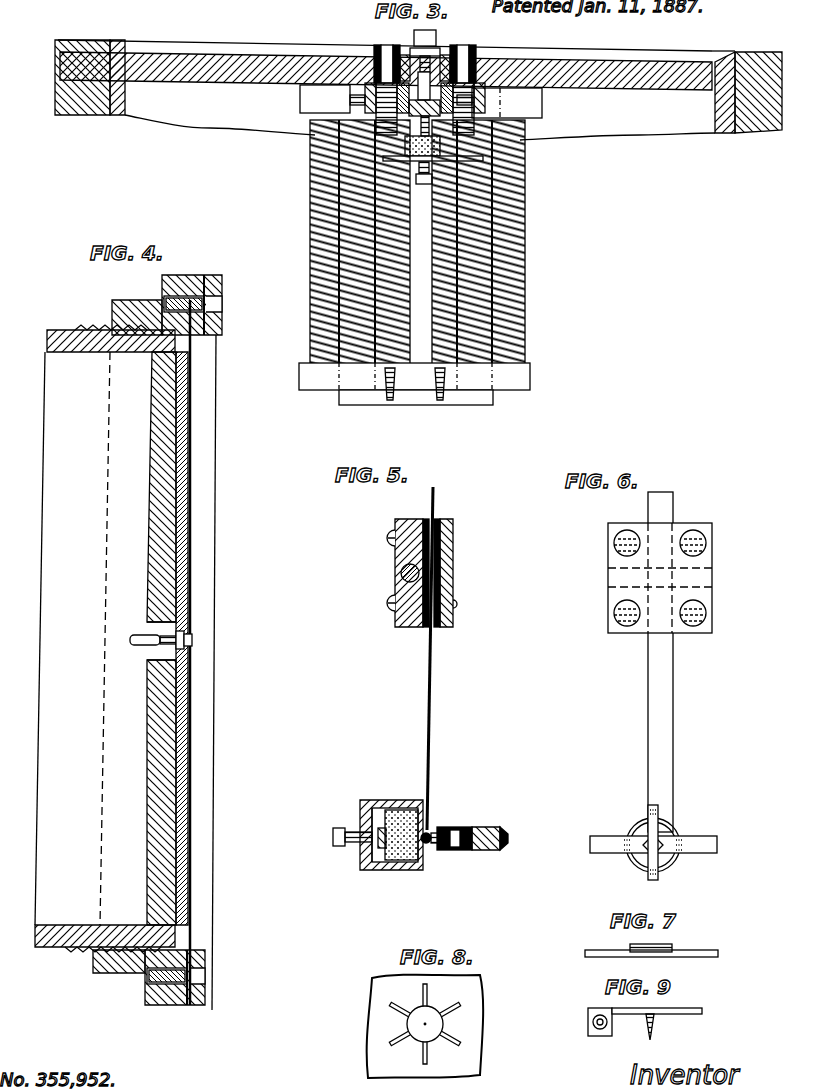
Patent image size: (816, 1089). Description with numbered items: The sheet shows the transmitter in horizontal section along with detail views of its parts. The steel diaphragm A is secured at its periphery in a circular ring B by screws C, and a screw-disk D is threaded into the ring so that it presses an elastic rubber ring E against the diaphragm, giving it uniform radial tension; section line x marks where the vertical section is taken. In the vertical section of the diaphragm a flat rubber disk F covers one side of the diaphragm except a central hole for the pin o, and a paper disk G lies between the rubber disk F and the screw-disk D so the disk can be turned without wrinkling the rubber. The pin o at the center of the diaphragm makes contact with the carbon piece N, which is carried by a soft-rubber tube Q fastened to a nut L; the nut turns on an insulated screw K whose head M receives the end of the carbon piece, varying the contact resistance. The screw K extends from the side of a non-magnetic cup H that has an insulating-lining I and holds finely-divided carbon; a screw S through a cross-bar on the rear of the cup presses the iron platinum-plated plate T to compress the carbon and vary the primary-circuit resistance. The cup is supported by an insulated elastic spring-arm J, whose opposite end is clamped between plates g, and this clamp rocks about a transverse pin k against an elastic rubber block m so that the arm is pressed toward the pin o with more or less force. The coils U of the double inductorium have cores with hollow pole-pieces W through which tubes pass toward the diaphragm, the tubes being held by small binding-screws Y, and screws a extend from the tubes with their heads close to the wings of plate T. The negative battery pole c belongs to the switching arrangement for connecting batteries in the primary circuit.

In FIG. 3, the diaphragm A is at (288, 50).
In FIG. 4, the diaphragm A is at (192, 446).
In FIG. 3, the elastic rubber ring E is at (418, 75).
In FIG. 3, the screw-disk D is at (420, 114).
In FIG. 4, the screw-disk D is at (125, 667).
In FIG. 3, the binding-screws Y is at (346, 99).
In FIG. 3, the battery negative pole c is at (378, 38).
In FIG. 3, the section line x is at (370, 48).
In FIG. 3, the screws a is at (399, 143).
In FIG. 3, the pin o is at (424, 65).
In FIG. 3, the carbon piece N is at (419, 105).
In FIG. 5, the carbon piece N is at (504, 848).
In FIG. 3, the elastic rubber tube or block m is at (434, 117).
In FIG. 3, the nut L is at (432, 128).
In FIG. 5, the nut L is at (450, 828).
In FIG. 3, the insulated screw K is at (416, 134).
In FIG. 5, the insulated screw K is at (432, 828).
In FIG. 3, the iron platinum-plated plate T is at (432, 155).
In FIG. 5, the iron platinum-plated plate T is at (365, 872).
In FIG. 6, the iron platinum-plated plate T is at (653, 845).
In FIG. 7, the iron platinum-plated plate T is at (651, 945).
In FIG. 3, the cup H is at (450, 146).
In FIG. 5, the cup H is at (360, 806).
In FIG. 6, the cup H is at (626, 826).
In FIG. 3, the screw S is at (424, 179).
In FIG. 5, the screw S is at (332, 838).
In FIG. 6, the screw S is at (630, 864).
In FIG. 3, the coils of double inductorium U is at (314, 294).
In FIG. 4, the circular ring or disk B is at (127, 639).
In FIG. 4, the screws C is at (188, 640).
In FIG. 4, the paper disk G is at (162, 575).
In FIG. 4, the flat rubber disk F is at (178, 520).
In FIG. 4, the soft-rubber tube Q is at (135, 636).
In FIG. 5, the soft-rubber tube Q is at (490, 825).
In FIG. 5, the insulated elastic adjustable arm J is at (433, 658).
In FIG. 6, the insulated elastic adjustable arm J is at (673, 722).
In FIG. 5, the pin k is at (394, 576).
In FIG. 6, the pin k is at (606, 582).
In FIG. 5, the plates g is at (397, 640).
In FIG. 6, the plates g is at (678, 532).
In FIG. 5, the insulating-lining I is at (402, 802).
In FIG. 5, the head M is at (462, 850).
In FIG. 9, the pole-pieces W is at (645, 1024).